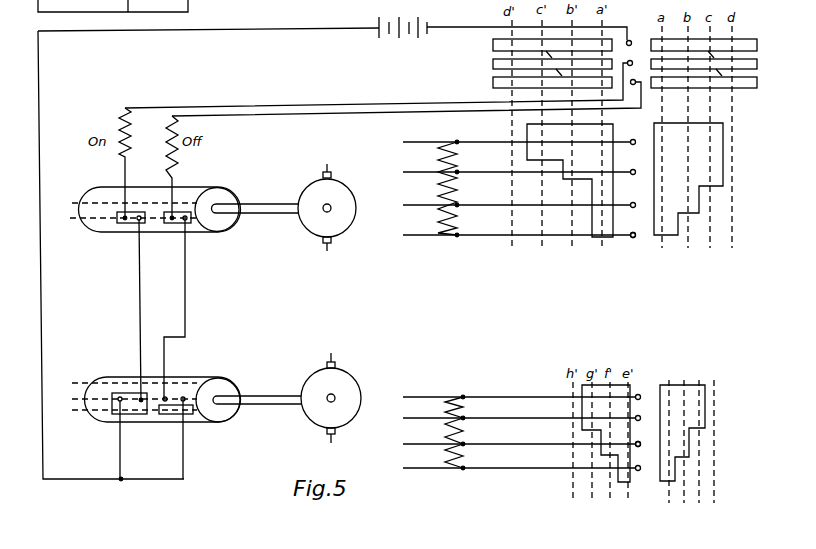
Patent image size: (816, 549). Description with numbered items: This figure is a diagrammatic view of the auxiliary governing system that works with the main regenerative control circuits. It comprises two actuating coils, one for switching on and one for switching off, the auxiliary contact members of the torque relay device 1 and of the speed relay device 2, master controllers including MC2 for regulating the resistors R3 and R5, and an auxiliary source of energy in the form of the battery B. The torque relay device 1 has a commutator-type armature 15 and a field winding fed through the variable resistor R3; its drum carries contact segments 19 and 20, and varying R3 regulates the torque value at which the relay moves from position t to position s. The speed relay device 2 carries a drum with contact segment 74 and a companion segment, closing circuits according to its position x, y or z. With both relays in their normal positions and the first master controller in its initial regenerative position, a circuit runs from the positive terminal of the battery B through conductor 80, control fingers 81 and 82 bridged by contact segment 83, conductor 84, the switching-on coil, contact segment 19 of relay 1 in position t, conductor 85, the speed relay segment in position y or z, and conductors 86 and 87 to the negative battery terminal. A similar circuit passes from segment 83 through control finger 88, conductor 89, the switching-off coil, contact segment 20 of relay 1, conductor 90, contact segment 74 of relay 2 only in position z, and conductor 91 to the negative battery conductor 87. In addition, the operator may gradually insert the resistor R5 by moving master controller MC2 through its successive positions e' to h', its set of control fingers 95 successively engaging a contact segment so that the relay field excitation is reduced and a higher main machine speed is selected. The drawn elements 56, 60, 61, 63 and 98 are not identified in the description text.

The control box 56 is at (113, 6).
The negative battery conductor 87 is at (339, 29).
The battery B is at (503, 20).
The conductor 84 is at (376, 106).
The conductor 89 is at (401, 110).
The control finger 81 is at (632, 40).
The control finger 82 is at (630, 56).
The control finger 88 is at (640, 75).
The contact segment 83 is at (493, 65).
The conductor 80 is at (538, 26).
The variable resistor R3 is at (519, 189).
The contact segment 63 is at (570, 180).
The contact segment 60 is at (636, 134).
The terminal 61 is at (633, 232).
The torque relay device 1 is at (256, 243).
The contact segment 19 is at (137, 223).
The contact segment 20 is at (184, 223).
The conductor 85 is at (140, 292).
The conductor 90 is at (188, 283).
The speed relay device 2 is at (276, 445).
The commutator-type armature 15 is at (135, 415).
The contact segment 74 is at (177, 415).
The conductor 86 is at (120, 457).
The conductor 91 is at (184, 457).
The resistor R5 is at (522, 433).
The contact segment 98 is at (601, 441).
The control fingers 95 is at (639, 440).
The master controller MC2 is at (705, 428).